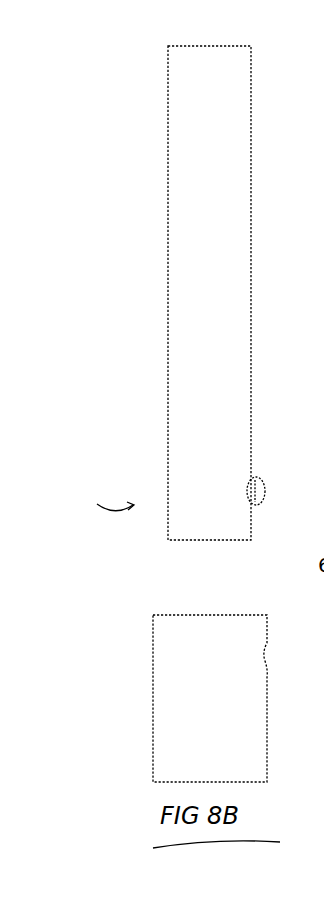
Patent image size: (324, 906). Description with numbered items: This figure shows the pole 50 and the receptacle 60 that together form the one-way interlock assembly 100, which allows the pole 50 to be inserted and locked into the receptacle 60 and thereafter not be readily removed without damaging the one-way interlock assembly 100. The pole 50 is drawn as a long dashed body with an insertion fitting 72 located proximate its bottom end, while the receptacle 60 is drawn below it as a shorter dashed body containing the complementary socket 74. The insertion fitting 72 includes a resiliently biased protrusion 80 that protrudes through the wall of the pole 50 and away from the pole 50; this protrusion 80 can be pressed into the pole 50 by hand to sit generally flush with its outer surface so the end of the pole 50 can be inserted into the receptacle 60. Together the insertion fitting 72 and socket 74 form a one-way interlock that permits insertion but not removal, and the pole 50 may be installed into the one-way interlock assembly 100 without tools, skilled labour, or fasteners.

The pole 50 is at (250, 293).
The receptacle 60 is at (138, 703).
The insertion fitting 72 is at (254, 515).
The socket 74 is at (260, 706).
The resiliently biased protrusion 80 is at (262, 482).
The one-way interlock assembly 100 is at (100, 484).